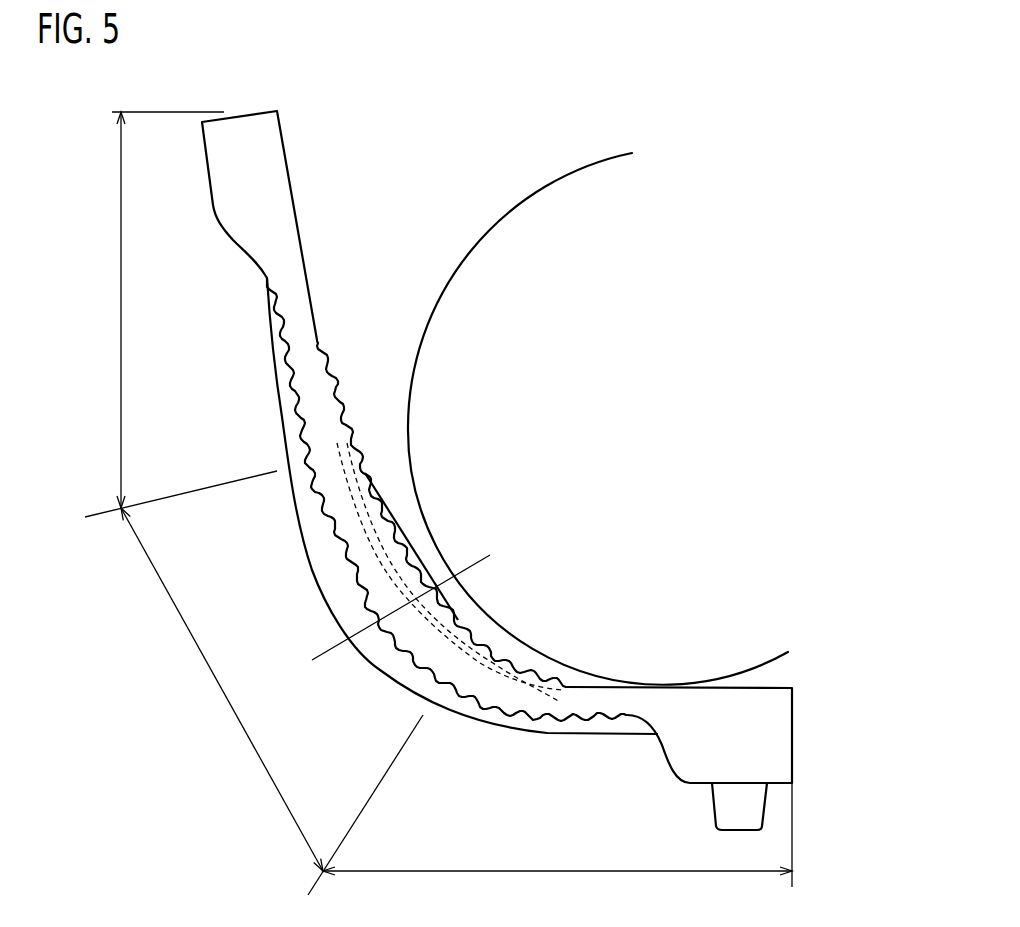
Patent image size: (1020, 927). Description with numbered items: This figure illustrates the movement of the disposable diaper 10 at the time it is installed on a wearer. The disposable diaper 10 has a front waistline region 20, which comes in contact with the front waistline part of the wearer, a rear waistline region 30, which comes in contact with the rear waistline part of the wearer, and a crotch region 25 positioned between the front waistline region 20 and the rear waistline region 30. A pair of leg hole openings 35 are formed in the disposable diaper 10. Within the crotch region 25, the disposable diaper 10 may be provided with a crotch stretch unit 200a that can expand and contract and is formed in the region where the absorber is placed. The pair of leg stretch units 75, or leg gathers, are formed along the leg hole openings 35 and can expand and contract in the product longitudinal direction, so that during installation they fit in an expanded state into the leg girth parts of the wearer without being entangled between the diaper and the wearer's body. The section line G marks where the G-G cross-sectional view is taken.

The disposable diaper 10 is at (218, 95).
The front waistline region 20 is at (154, 310).
The crotch region 25 is at (204, 671).
The rear waistline region 30 is at (550, 809).
The leg hole openings 35 is at (247, 376).
The leg stretch units 75 is at (517, 678).
The crotch stretch unit 200a is at (430, 572).
The G-G cross-section line G is at (400, 613).